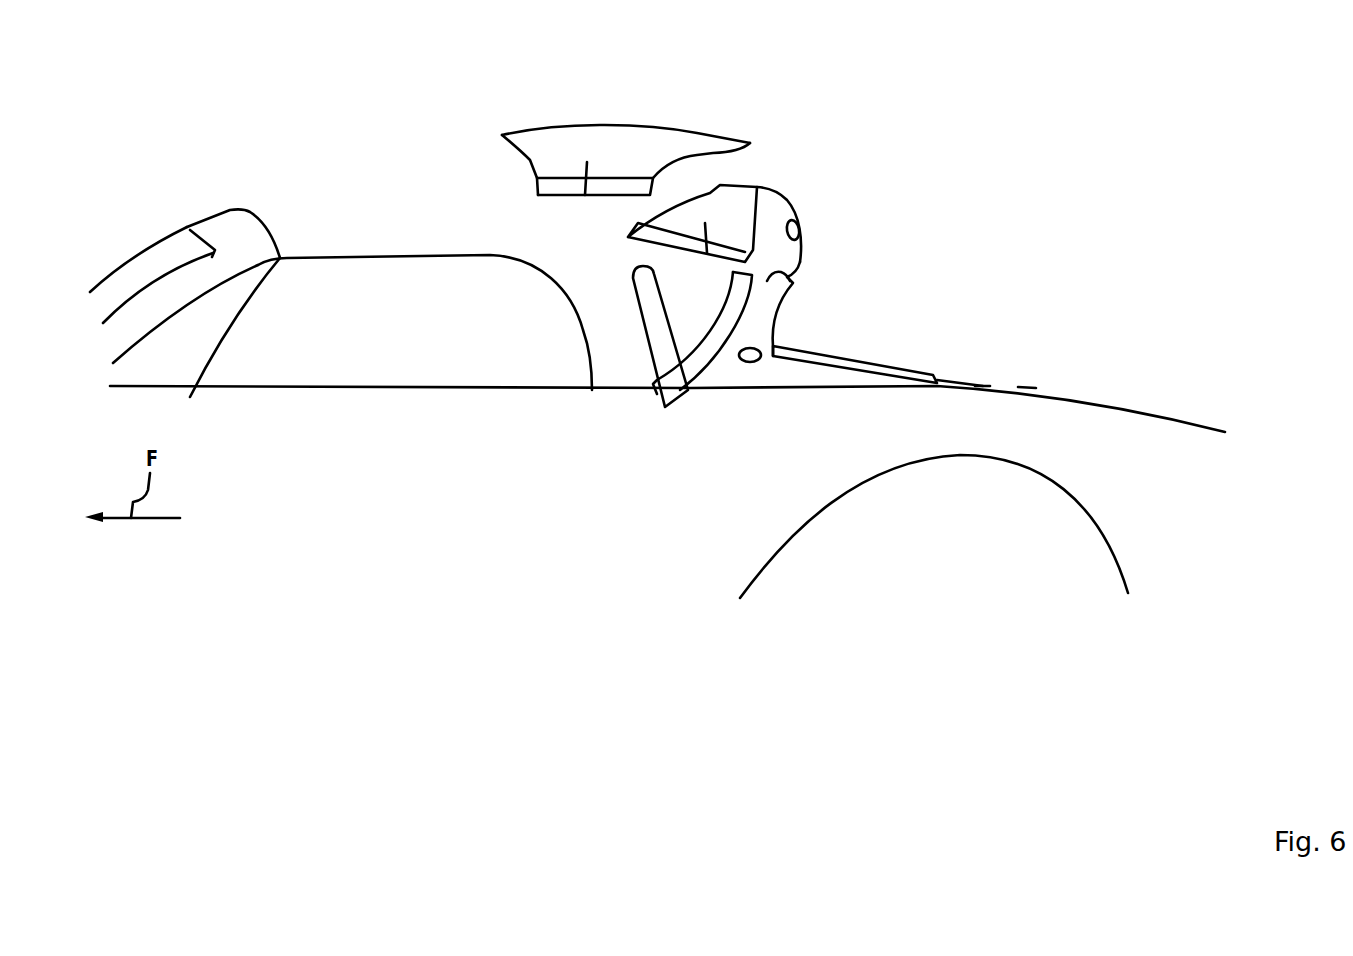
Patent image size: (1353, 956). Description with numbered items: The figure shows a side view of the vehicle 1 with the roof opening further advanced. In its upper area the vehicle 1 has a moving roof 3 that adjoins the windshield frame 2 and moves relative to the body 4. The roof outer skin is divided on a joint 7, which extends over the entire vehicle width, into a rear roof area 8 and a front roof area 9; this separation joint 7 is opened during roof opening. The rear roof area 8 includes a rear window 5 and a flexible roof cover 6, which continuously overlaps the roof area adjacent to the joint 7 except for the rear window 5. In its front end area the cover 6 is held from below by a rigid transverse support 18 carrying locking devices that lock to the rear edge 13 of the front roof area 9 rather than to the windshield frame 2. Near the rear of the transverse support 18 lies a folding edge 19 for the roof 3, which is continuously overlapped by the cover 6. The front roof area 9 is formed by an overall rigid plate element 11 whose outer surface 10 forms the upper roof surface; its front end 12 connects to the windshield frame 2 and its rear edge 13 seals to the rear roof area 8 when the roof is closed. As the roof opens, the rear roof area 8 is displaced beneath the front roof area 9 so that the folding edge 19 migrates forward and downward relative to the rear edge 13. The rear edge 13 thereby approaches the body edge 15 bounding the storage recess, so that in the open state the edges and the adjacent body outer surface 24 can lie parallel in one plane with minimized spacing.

The vehicle 1 is at (1050, 180).
The windshield frame 2 is at (223, 227).
The moving roof 3 is at (770, 241).
The body 4 is at (729, 452).
The rear window 5 is at (867, 357).
The flexible roof cover 6 is at (793, 283).
The joint 7 is at (753, 165).
The rear roof area 8 is at (829, 222).
The front roof area 9 is at (626, 124).
The outer surface 10 is at (648, 112).
The plate element 11 is at (585, 195).
The front end 12 is at (546, 145).
The rear edge 13 is at (690, 144).
The edge 15 is at (985, 375).
The transverse support 18 is at (707, 253).
The folding edge 19 is at (787, 186).
The body outer surface 24 is at (1027, 375).